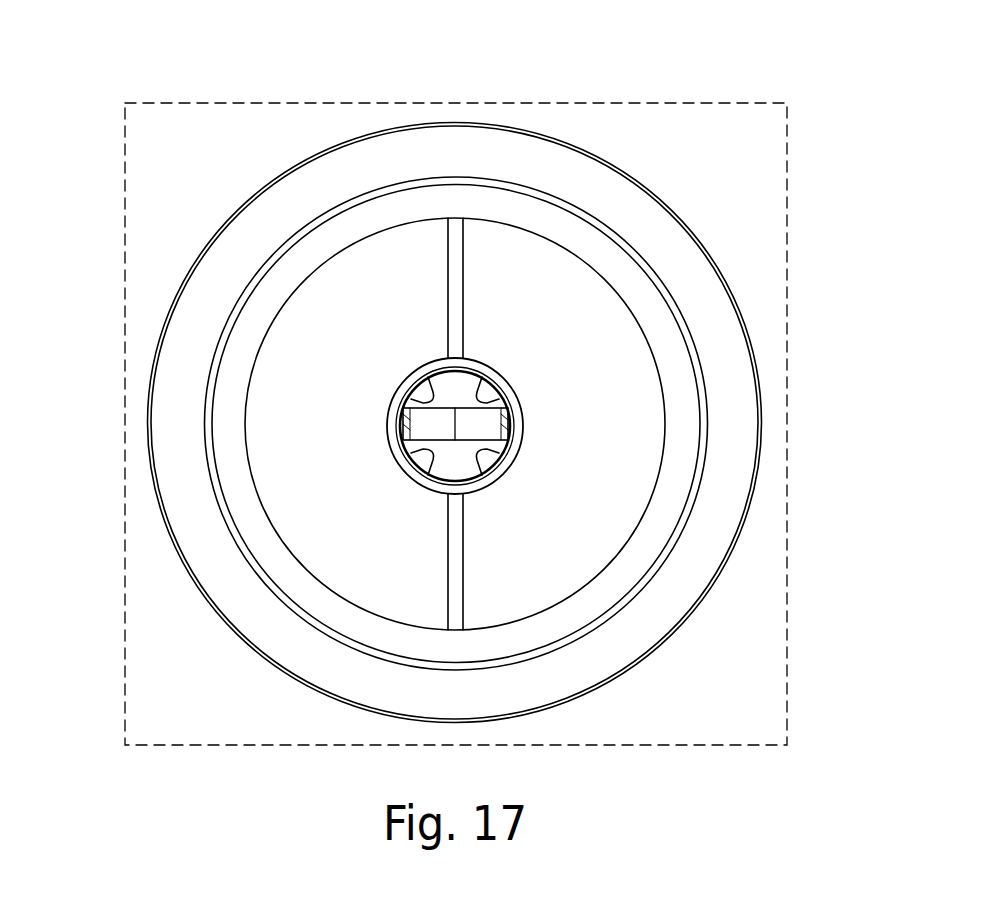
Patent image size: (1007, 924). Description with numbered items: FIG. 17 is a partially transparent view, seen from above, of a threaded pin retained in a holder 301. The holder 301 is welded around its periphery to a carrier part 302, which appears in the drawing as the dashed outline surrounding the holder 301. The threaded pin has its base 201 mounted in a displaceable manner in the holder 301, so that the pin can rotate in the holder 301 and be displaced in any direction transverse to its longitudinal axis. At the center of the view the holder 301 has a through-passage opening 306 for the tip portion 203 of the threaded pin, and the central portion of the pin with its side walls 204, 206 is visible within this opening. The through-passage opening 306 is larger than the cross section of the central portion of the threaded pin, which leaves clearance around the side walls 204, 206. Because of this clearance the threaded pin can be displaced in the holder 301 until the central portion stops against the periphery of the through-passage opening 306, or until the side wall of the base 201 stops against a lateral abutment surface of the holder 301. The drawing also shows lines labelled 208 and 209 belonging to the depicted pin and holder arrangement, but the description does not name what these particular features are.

The base 201 is at (550, 566).
The tip portion 203 is at (443, 428).
The side wall 204 is at (417, 452).
The side wall 206 is at (508, 465).
The inner disc 208 is at (278, 418).
The spokes 209 is at (530, 272).
The holder 301 is at (715, 298).
The carrier part 302 is at (750, 207).
The through-passage opening 306 is at (523, 413).